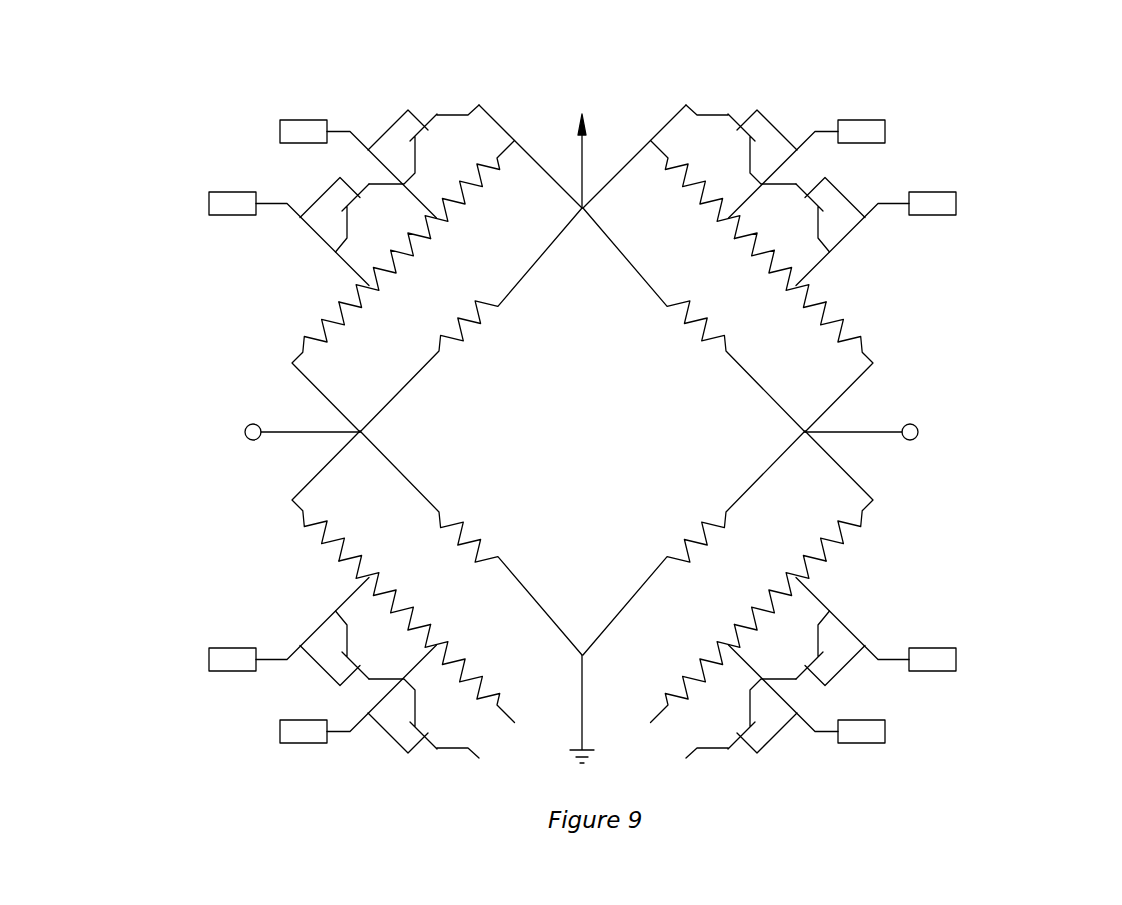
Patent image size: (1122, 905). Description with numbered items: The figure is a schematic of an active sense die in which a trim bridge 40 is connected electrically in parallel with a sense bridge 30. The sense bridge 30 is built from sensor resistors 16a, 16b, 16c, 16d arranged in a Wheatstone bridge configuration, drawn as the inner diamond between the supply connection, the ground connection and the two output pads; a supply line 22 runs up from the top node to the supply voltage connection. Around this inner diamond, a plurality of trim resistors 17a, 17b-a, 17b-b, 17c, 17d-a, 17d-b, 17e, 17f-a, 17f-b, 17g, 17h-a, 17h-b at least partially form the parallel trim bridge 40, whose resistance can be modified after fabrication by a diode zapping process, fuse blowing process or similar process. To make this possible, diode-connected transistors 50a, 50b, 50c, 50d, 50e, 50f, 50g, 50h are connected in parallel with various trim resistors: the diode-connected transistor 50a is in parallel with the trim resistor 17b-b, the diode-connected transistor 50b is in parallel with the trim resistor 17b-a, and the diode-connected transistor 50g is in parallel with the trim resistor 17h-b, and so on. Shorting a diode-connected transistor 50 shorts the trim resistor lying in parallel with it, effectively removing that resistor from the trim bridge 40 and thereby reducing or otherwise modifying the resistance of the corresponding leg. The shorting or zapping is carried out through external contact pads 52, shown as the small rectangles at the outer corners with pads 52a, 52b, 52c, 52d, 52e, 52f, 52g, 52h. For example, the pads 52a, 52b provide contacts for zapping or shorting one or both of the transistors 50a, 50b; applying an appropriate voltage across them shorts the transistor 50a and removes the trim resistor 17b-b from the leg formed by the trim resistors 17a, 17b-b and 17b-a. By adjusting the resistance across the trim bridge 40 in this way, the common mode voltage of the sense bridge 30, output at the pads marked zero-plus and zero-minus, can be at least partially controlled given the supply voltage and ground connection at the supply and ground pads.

The sensor resistor 16a is at (465, 339).
The sensor resistor 16b is at (700, 339).
The sensor resistor 16c is at (465, 524).
The sensor resistor 16d is at (700, 524).
The trim resistor 17a is at (330, 341).
The trim resistor 17b-a is at (469, 189).
The trim resistor 17b-b is at (400, 270).
The trim resistor 17c is at (835, 341).
The trim resistor 17d-a is at (696, 189).
The trim resistor 17d-b is at (765, 270).
The trim resistor 17e is at (330, 522).
The trim resistor 17f-a is at (469, 674).
The trim resistor 17f-b is at (400, 593).
The trim resistor 17g is at (835, 522).
The trim resistor 17h-a is at (696, 674).
The trim resistor 17h-b is at (765, 593).
The supply voltage line 22 is at (530, 103).
The sense bridge 30 is at (580, 402).
The trim bridge 40 is at (580, 402).
The diode-connected transistor 50 is at (599, 418).
The diode-connected transistor 50a is at (277, 171).
The diode-connected transistor 50b is at (389, 88).
The diode-connected transistor 50c is at (887, 171).
The diode-connected transistor 50d is at (784, 91).
The diode-connected transistor 50e is at (277, 604).
The diode-connected transistor 50f is at (386, 766).
The diode-connected transistor 50g is at (877, 622).
The diode-connected transistor 50h is at (792, 764).
The external contact pad 52 is at (583, 415).
The pad 52a is at (226, 192).
The pad 52b is at (298, 120).
The pad 52c is at (940, 192).
The pad 52d is at (868, 120).
The pad 52e is at (226, 648).
The pad 52f is at (298, 720).
The pad 52g is at (940, 648).
The pad 52h is at (868, 720).